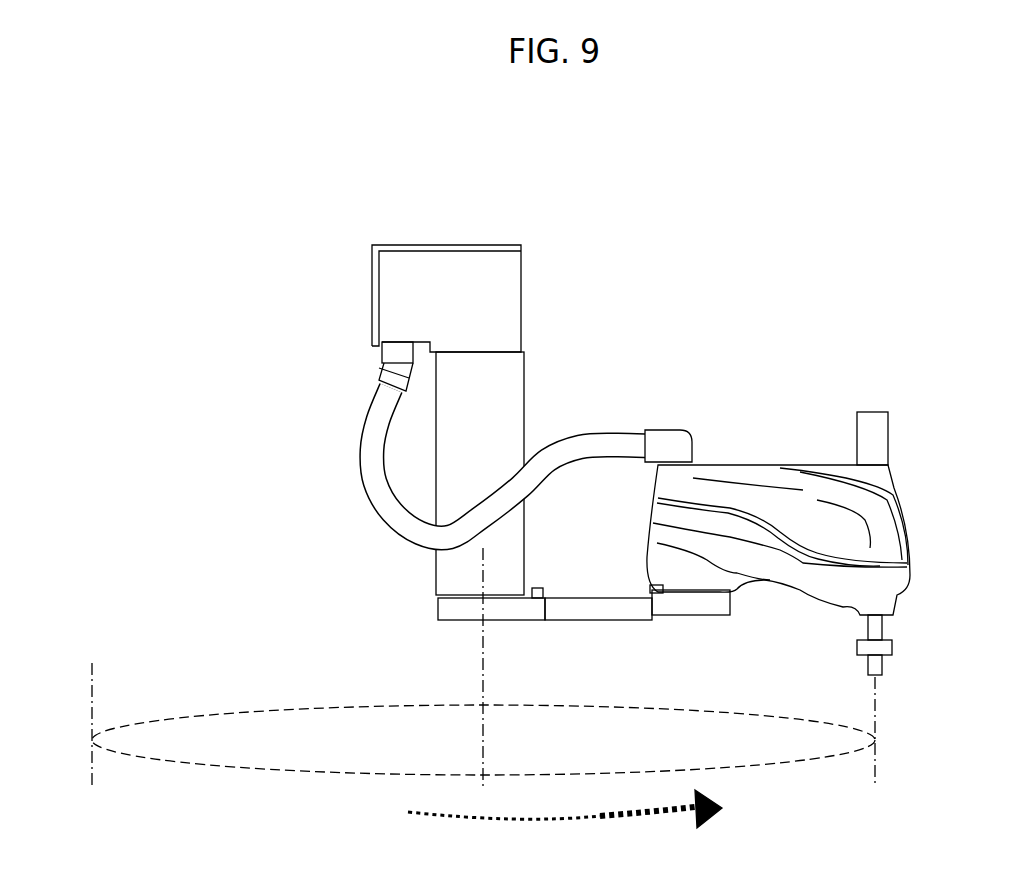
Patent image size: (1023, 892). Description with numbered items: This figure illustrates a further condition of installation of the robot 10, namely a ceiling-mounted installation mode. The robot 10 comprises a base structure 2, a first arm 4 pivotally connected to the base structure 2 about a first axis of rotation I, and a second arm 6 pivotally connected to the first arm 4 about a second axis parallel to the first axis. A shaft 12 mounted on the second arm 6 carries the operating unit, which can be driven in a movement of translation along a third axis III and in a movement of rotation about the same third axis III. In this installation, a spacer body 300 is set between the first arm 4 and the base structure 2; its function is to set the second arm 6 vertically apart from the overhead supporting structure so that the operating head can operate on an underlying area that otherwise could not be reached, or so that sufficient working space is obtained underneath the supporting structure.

The base structure 2 is at (526, 287).
The first arm 4 is at (610, 623).
The second arm 6 is at (795, 464).
The robot 10 is at (746, 288).
The shaft 12 is at (878, 632).
The spacer body 300 is at (500, 410).
The first axis of rotation I is at (483, 669).
The third axis III is at (875, 705).